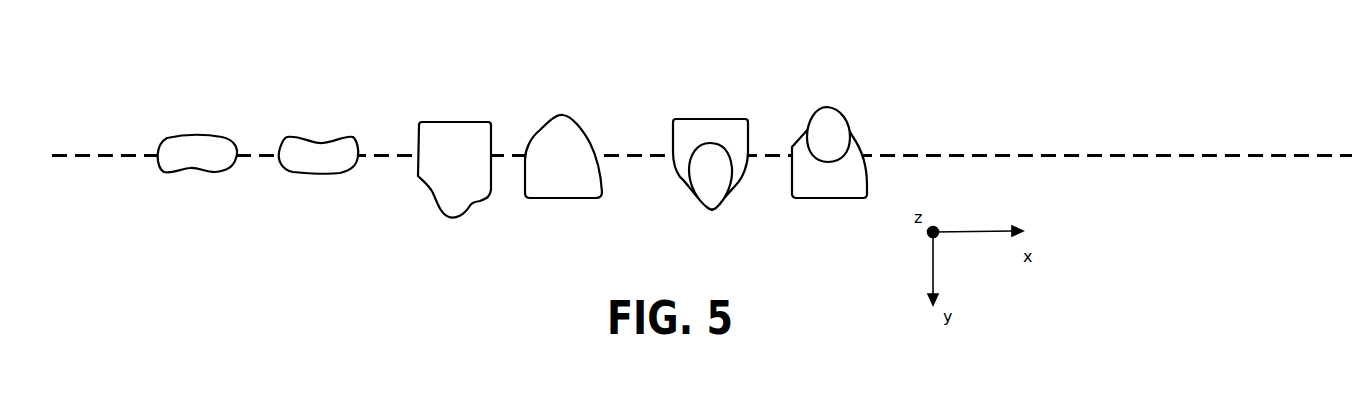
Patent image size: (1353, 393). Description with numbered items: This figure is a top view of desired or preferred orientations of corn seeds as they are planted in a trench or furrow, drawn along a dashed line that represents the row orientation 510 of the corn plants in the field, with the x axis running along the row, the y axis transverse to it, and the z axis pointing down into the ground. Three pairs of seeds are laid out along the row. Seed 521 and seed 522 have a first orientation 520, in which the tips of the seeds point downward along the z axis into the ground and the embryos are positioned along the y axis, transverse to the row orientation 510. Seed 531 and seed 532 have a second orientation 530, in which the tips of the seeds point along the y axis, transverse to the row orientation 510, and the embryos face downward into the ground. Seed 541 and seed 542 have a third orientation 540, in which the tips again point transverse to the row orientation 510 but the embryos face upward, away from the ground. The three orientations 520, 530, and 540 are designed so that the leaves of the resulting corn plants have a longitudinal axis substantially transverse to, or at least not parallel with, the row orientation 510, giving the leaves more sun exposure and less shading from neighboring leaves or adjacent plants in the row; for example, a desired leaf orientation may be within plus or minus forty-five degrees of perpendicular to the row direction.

The row orientation 510 is at (1043, 152).
The first orientation 520 is at (226, 128).
The seed 521 is at (212, 163).
The seed 522 is at (333, 163).
The second orientation 530 is at (565, 217).
The seed 531 is at (469, 168).
The seed 532 is at (579, 168).
The third orientation 540 is at (720, 100).
The seed 541 is at (712, 143).
The seed 542 is at (845, 195).